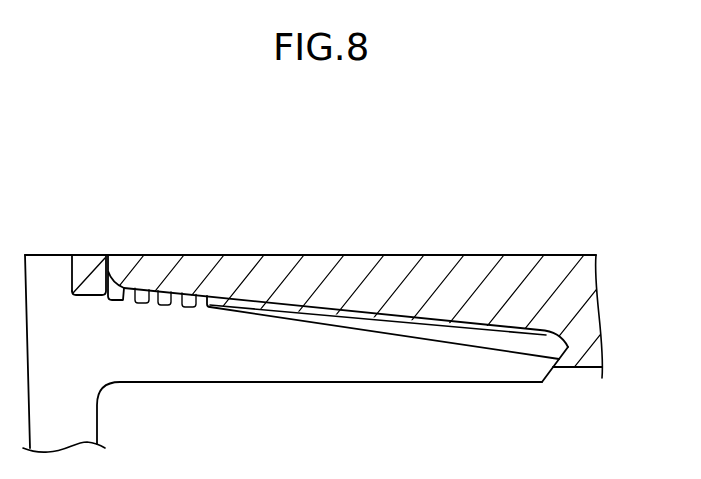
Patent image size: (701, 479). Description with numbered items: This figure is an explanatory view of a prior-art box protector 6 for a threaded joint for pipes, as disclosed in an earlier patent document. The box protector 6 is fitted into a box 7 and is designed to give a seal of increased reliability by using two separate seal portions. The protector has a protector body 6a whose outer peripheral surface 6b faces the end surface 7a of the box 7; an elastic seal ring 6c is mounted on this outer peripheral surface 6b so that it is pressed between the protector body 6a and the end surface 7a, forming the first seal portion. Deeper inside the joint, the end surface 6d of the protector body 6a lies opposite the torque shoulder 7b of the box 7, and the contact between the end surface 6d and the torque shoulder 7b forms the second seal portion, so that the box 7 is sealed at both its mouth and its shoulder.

The box protector 6 is at (288, 384).
The protector body 6a is at (195, 383).
The outer peripheral surface 6b is at (70, 276).
The elastic seal ring 6c is at (90, 277).
The end surface 6d is at (552, 360).
The box 7 is at (590, 325).
The end surface 7a is at (110, 272).
The torque shoulder 7b is at (542, 333).